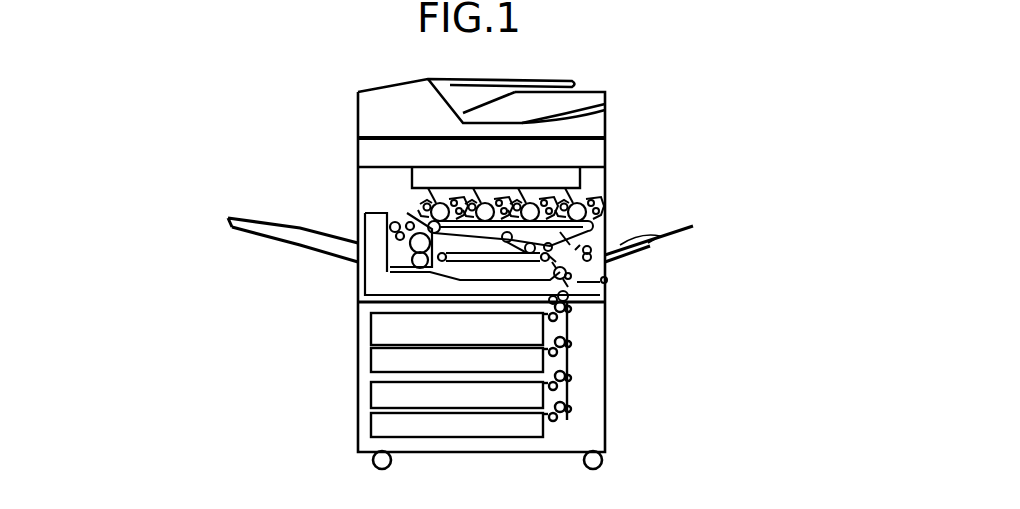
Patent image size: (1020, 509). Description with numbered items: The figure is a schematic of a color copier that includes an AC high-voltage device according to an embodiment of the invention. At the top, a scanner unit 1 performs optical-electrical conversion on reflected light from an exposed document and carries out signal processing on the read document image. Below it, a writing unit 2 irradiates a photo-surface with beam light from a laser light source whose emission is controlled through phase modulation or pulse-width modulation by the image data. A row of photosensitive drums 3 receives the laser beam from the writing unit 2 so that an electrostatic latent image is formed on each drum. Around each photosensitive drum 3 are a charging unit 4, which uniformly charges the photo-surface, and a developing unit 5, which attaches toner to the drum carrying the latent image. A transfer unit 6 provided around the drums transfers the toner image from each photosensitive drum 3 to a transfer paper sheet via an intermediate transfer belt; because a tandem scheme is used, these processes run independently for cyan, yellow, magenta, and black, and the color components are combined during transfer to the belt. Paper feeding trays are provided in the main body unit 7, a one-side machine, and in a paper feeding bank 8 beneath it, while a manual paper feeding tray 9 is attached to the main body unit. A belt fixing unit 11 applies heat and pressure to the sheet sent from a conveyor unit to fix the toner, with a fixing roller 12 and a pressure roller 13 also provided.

The scanner unit 1 is at (385, 158).
The writing unit 2 is at (565, 178).
The photosensitive drums 3 is at (598, 215).
The charging unit 4 is at (584, 203).
The developing unit 5 is at (596, 207).
The transfer unit 6 is at (590, 228).
The main body unit 7 is at (407, 288).
The paper feeding bank 8 is at (357, 383).
The manual paper feeding tray 9 is at (668, 243).
The belt fixing unit 11 is at (386, 235).
The fixing roller 12 is at (395, 236).
The pressure roller 13 is at (412, 262).